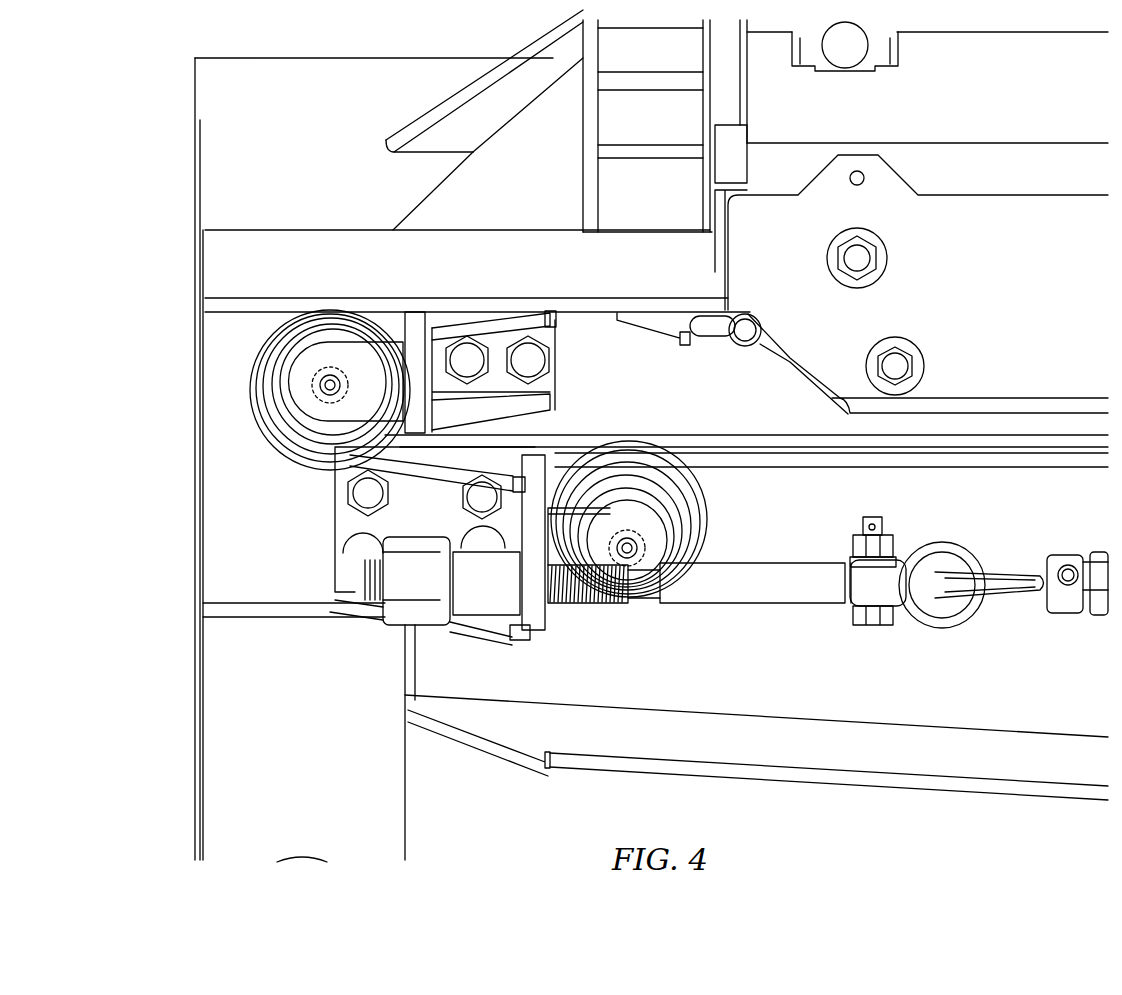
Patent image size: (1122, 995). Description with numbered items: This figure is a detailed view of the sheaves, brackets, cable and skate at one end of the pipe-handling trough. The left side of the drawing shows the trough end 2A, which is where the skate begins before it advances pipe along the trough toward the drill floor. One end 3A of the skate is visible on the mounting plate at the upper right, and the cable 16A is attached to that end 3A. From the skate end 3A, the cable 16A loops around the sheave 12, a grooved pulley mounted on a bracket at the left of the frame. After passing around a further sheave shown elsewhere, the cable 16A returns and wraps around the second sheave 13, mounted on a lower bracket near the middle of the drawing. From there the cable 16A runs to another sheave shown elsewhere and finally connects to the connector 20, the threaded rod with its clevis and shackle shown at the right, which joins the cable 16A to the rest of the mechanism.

The trough end 2A is at (192, 370).
The skate end 3A is at (842, 328).
The sheave 12 is at (283, 418).
The sheave 13 is at (707, 506).
The cable 16A is at (615, 315).
The connector 20 is at (803, 604).